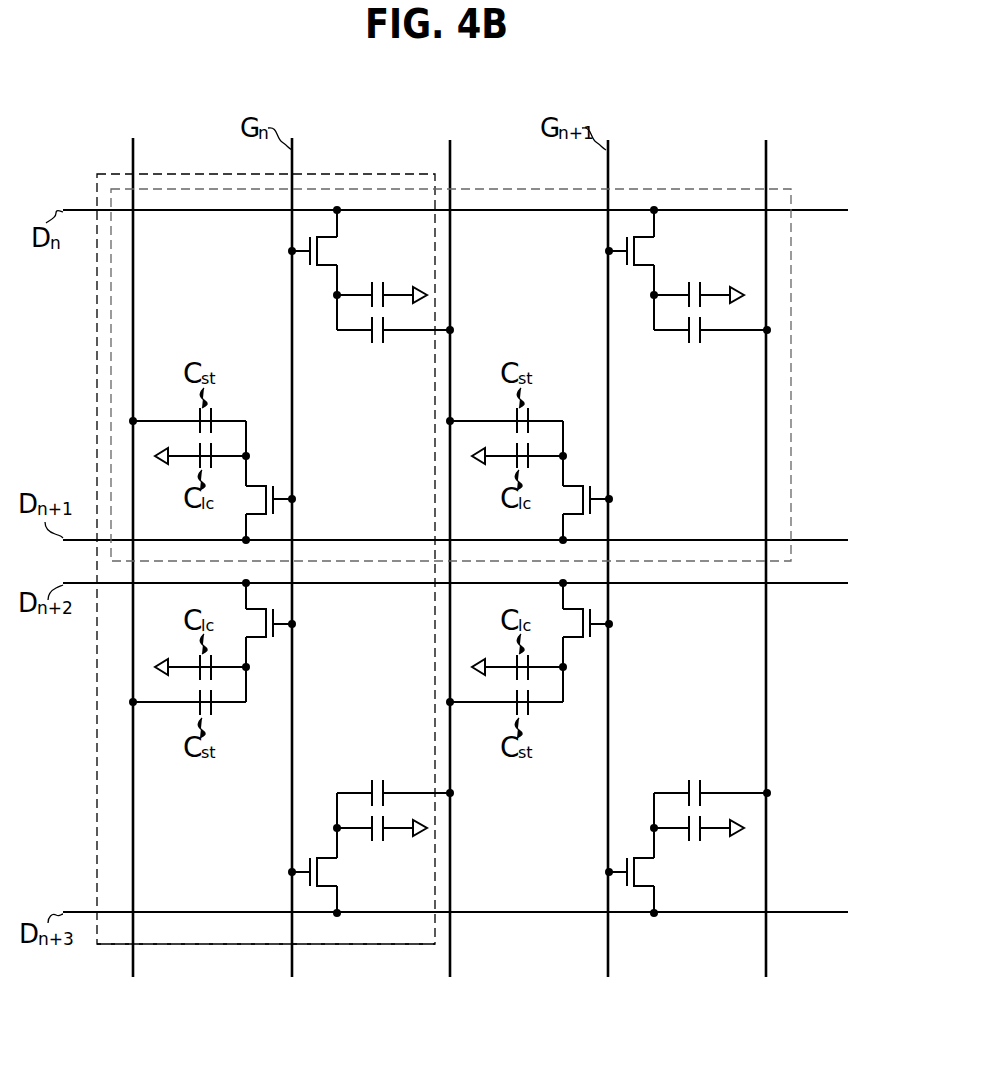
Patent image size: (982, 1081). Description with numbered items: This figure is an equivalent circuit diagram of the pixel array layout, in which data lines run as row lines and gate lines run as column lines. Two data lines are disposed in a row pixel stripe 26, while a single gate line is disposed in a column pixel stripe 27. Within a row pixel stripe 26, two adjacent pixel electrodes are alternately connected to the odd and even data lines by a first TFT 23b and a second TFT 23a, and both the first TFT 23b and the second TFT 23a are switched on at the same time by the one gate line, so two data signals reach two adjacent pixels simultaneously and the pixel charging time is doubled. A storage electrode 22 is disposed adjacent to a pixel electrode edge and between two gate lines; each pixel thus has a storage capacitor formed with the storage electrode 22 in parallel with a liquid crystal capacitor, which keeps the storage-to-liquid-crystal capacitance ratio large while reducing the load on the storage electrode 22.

The storage electrode 22 is at (450, 168).
The second TFT 23a is at (276, 483).
The first TFT 23b is at (300, 237).
The row pixel stripe 26 is at (791, 392).
The column pixel stripe 27 is at (352, 944).